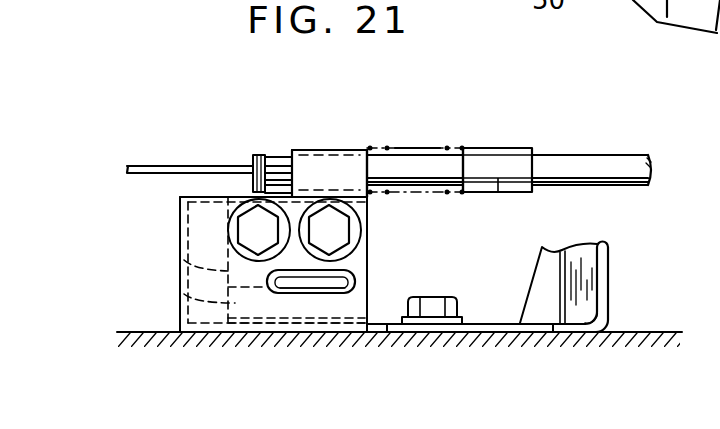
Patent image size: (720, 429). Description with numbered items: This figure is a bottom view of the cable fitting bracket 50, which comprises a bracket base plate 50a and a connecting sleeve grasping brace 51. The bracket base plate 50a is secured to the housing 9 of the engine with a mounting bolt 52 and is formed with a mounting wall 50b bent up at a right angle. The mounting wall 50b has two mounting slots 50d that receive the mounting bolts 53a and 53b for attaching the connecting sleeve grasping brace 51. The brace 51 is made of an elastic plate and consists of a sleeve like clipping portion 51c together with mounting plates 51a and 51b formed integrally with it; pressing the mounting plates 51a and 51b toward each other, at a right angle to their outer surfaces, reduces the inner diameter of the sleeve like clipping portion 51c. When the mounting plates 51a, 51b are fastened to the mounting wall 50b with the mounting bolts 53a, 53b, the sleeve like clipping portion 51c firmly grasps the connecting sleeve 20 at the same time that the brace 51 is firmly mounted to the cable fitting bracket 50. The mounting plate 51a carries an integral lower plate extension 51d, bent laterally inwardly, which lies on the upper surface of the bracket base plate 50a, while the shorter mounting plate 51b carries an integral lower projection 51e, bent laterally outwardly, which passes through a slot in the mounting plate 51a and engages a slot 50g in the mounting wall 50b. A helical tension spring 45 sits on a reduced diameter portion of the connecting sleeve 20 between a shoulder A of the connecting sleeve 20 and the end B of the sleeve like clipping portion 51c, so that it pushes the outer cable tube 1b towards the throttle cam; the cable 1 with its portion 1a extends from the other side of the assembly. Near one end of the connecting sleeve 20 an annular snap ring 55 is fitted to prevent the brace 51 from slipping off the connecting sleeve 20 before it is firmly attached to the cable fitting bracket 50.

The stabilizer shaft 1 is at (525, 148).
The shaft left portion 1a is at (137, 165).
The outer cable tube 1b is at (602, 153).
The housing 9 is at (638, 332).
The connecting sleeve 20 is at (500, 193).
The helical tension spring 45 is at (449, 148).
The cable fitting bracket 50 is at (614, 272).
The bracket base plate 50a is at (497, 331).
The mounting wall 50b is at (204, 246).
The mounting slots 50d is at (240, 196).
The slot 50g is at (356, 280).
The connecting sleeve grasping brace 51 is at (314, 146).
The mounting plate 51a is at (184, 294).
The mounting plate 51b is at (184, 260).
The sleeve like clipping portion 51c is at (333, 149).
The lower plate extension 51d is at (261, 323).
The lower projection 51e is at (310, 291).
The mounting bolt 52 is at (430, 308).
The mounting bolt 53a is at (250, 231).
The mounting bolt 53b is at (340, 232).
The annular snap ring 55 is at (263, 154).
The shoulder A is at (479, 148).
The end B is at (360, 148).